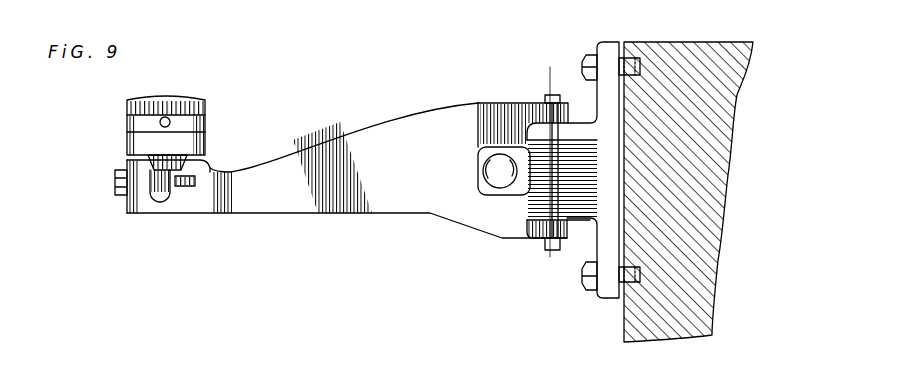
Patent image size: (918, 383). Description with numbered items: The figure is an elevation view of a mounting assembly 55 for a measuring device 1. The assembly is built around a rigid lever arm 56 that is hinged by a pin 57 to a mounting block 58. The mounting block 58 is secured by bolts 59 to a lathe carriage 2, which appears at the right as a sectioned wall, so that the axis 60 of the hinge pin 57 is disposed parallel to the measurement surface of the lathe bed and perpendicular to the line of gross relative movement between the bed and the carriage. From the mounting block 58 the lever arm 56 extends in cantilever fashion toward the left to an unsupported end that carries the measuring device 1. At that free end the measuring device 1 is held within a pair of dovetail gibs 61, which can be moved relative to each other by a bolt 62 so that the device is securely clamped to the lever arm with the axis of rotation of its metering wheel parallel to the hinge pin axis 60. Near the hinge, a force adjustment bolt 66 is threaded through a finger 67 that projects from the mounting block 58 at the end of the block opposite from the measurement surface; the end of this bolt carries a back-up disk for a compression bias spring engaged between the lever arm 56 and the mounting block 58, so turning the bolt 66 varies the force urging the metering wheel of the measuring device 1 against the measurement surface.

The measuring device 1 is at (214, 136).
The lathe carriage 2 is at (735, 96).
The mounting assembly 55 is at (318, 222).
The lever arm 56 is at (380, 126).
The pin 57 is at (547, 98).
The mounting block 58 is at (587, 221).
The bolts 59 is at (642, 62).
The axis 60 is at (550, 68).
The dovetail gibs 61 is at (130, 163).
The bolt 62 is at (116, 196).
The force adjustment bolt 66 is at (491, 153).
The finger 67 is at (488, 197).